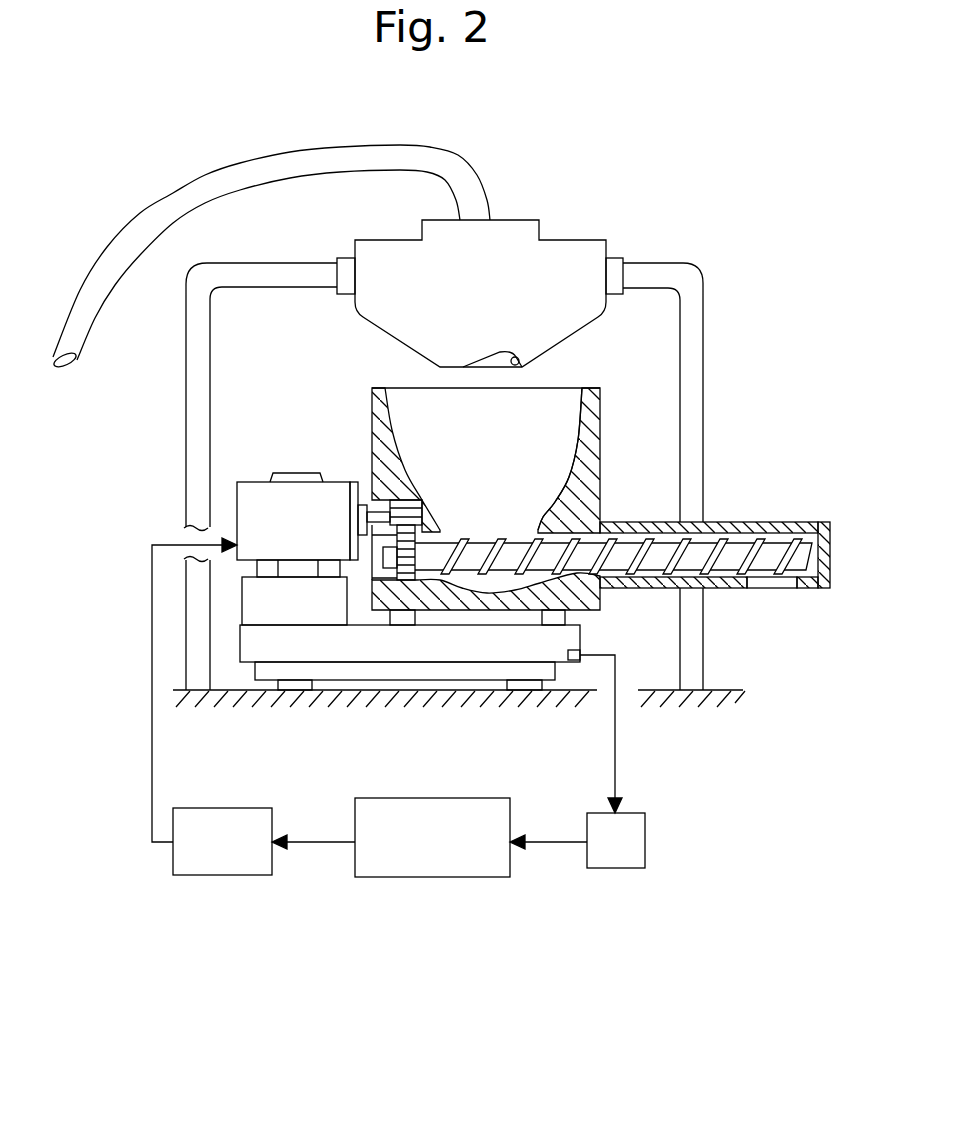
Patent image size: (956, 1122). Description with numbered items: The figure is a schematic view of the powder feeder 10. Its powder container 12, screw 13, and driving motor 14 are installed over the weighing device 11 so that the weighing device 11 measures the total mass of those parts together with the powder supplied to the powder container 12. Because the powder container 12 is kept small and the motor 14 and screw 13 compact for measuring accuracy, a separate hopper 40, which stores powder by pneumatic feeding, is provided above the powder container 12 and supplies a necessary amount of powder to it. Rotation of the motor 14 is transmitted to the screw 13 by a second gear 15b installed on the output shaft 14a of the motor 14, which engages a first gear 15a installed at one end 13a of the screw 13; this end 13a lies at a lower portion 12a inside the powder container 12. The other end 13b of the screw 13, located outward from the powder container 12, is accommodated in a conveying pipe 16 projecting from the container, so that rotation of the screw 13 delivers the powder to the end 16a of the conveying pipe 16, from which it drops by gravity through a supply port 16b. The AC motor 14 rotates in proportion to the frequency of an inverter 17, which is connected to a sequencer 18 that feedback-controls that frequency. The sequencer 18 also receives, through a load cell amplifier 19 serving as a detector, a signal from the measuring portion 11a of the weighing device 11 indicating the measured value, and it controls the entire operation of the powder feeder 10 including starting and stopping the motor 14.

The powder feeder 10 is at (720, 463).
The weighing device 11 is at (247, 638).
The measuring portion 11a is at (572, 662).
The powder container 12 is at (600, 417).
The lower portion 12a is at (507, 527).
The screw 13 is at (730, 557).
The one end of the screw 13a is at (425, 560).
The other end of the screw 13b is at (800, 550).
The driving motor 14 is at (305, 490).
The output shaft 14a is at (370, 510).
The first gear 15a is at (405, 582).
The second gear 15b is at (392, 504).
The conveying pipe 16 is at (618, 586).
The end of the conveying pipe 16a is at (823, 590).
The supply port 16b is at (760, 580).
The inverter 17 is at (222, 848).
The sequencer 18 is at (440, 850).
The load cell amplifier 19 is at (618, 850).
The hopper 40 is at (577, 253).